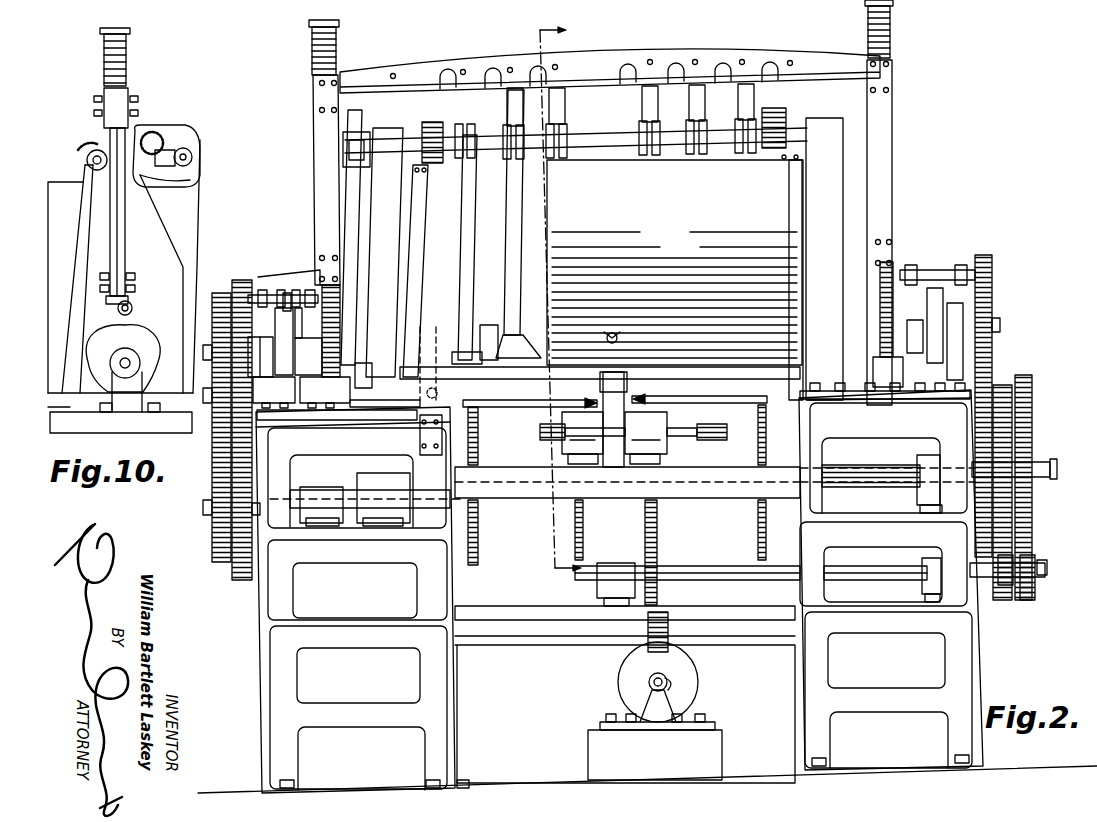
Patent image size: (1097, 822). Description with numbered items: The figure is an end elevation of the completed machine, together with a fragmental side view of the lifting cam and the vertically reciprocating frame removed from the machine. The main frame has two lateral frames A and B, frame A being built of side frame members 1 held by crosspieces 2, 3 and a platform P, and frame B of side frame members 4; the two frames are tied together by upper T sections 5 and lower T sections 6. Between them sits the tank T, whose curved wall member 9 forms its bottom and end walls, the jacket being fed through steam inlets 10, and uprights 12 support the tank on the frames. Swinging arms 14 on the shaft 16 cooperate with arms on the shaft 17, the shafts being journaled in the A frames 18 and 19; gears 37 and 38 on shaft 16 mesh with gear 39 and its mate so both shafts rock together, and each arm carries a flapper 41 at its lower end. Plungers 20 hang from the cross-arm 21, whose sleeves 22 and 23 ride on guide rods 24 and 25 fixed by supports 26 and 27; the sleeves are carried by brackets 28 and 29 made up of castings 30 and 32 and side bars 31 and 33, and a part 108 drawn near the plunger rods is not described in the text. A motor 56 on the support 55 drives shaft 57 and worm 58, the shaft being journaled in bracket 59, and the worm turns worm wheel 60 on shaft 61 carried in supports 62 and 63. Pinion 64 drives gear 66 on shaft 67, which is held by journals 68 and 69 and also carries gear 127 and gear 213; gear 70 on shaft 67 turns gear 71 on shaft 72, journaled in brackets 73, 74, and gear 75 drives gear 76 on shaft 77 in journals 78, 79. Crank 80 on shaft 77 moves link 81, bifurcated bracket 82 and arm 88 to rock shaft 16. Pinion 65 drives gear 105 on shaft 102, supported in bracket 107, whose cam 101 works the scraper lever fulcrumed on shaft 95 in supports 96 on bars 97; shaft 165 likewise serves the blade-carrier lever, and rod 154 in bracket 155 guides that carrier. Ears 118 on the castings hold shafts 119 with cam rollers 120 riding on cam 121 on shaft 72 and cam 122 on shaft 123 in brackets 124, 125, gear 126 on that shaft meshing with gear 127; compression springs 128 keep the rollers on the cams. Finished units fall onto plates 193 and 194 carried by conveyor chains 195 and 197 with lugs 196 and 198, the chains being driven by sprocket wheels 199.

In FIG. 2, the side frame members 1 is at (273, 642).
In FIG. 2, the crosspiece 2 is at (333, 527).
In FIG. 2, the crosspiece 3 is at (378, 573).
In FIG. 2, the side frame members 4 is at (953, 618).
In FIG. 2, the upper T sections 5 is at (550, 488).
In FIG. 2, the lower T sections 6 is at (585, 633).
In FIG. 2, the curved wall member 9 is at (601, 269).
In FIG. 2, the steam inlets 10 is at (614, 333).
In FIG. 2, the uprights 12 is at (604, 277).
In FIG. 2, the swinging arms 14 is at (478, 262).
In FIG. 10, the shaft 16 is at (165, 148).
In FIG. 2, the shaft 16 is at (612, 140).
In FIG. 10, the shaft 17 is at (87, 158).
In FIG. 10, the A frame 18 is at (156, 231).
In FIG. 2, the A frame 18 is at (384, 252).
In FIG. 2, the A frame 19 is at (824, 259).
In FIG. 2, the plungers 20 is at (506, 290).
In FIG. 2, the cross-arm 21 is at (430, 70).
In FIG. 10, the sleeve 22 is at (122, 100).
In FIG. 2, the sleeve 22 is at (312, 115).
In FIG. 2, the sleeve 23 is at (880, 98).
In FIG. 10, the vertical guide rod 24 is at (118, 182).
In FIG. 2, the vertical guide rod 24 is at (312, 52).
In FIG. 2, the vertical guide rod 25 is at (888, 42).
In FIG. 2, the support 26 is at (345, 355).
In FIG. 2, the support 27 is at (880, 360).
In FIG. 2, the vertically reciprocating bracket 28 is at (308, 126).
In FIG. 2, the vertically reciprocating bracket 29 is at (900, 132).
In FIG. 10, the casting member 30 is at (108, 283).
In FIG. 2, the casting member 30 is at (303, 263).
In FIG. 10, the side bars 31 is at (100, 105).
In FIG. 2, the side bars 31 is at (325, 172).
In FIG. 2, the casting 32 is at (905, 258).
In FIG. 2, the side bars 33 is at (878, 175).
In FIG. 10, the gear 37 is at (157, 134).
In FIG. 2, the gear 37 is at (430, 125).
In FIG. 2, the gear 38 is at (790, 112).
In FIG. 10, the gear 39 is at (85, 142).
In FIG. 2, the flapper 41 is at (503, 350).
In FIG. 2, the support 55 is at (655, 747).
In FIG. 2, the motor 56 is at (683, 673).
In FIG. 2, the shaft 57 is at (650, 683).
In FIG. 2, the worm 58 is at (665, 683).
In FIG. 2, the bracket 59 is at (658, 708).
In FIG. 2, the worm wheel 60 is at (643, 545).
In FIG. 2, the shaft 61 is at (725, 572).
In FIG. 2, the support 62 is at (616, 584).
In FIG. 2, the support 63 is at (923, 557).
In FIG. 2, the pinion 64 is at (1010, 587).
In FIG. 2, the pinion 65 is at (1047, 580).
In FIG. 2, the gear 66 is at (1002, 387).
In FIG. 2, the shaft 67 is at (213, 500).
In FIG. 2, the journal 68 is at (923, 495).
In FIG. 2, the journal 69 is at (366, 505).
In FIG. 2, the gear 70 is at (235, 563).
In FIG. 2, the gear 71 is at (240, 280).
In FIG. 2, the shaft 72 is at (315, 348).
In FIG. 10, the bracket 73 is at (138, 368).
In FIG. 2, the bracket 73 is at (260, 357).
In FIG. 2, the bracket 74 is at (298, 343).
In FIG. 2, the gear 75 is at (221, 292).
In FIG. 2, the gear 76 is at (213, 447).
In FIG. 2, the shaft 77 is at (213, 415).
In FIG. 2, the journal 78 is at (293, 392).
In FIG. 2, the journal 79 is at (325, 390).
In FIG. 2, the crank 80 is at (338, 404).
In FIG. 2, the link 81 is at (352, 190).
In FIG. 10, the bifurcated bracket 82 is at (176, 182).
In FIG. 2, the bifurcated bracket 82 is at (352, 148).
In FIG. 10, the arm 88 is at (192, 155).
In FIG. 2, the shaft 95 is at (570, 430).
In FIG. 2, the supports 96 is at (614, 438).
In FIG. 2, the bars 97 is at (647, 463).
In FIG. 2, the cam 101 is at (632, 525).
In FIG. 2, the shaft 102 is at (1040, 455).
In FIG. 2, the gear 105 is at (1045, 387).
In FIG. 2, the bracket 107 is at (935, 457).
In FIG. 2, the bracket 108 is at (490, 333).
In FIG. 10, the ears 118 is at (118, 302).
In FIG. 2, the ears 118 is at (300, 268).
In FIG. 10, the shaft 119 is at (165, 265).
In FIG. 2, the shaft 119 is at (307, 262).
In FIG. 10, the cam roller 120 is at (131, 307).
In FIG. 2, the cam roller 120 is at (280, 300).
In FIG. 10, the cam 121 is at (123, 358).
In FIG. 2, the cam 121 is at (217, 450).
In FIG. 2, the cam 122 is at (965, 300).
In FIG. 2, the shaft 123 is at (1000, 326).
In FIG. 2, the bracket 124 is at (915, 335).
In FIG. 2, the bracket 125 is at (955, 340).
In FIG. 2, the gear 126 is at (990, 315).
In FIG. 2, the gear 127 is at (980, 523).
In FIG. 10, the compression springs 128 is at (128, 47).
In FIG. 2, the compression springs 128 is at (308, 45).
In FIG. 2, the rod 154 is at (413, 388).
In FIG. 2, the bracket 155 is at (427, 332).
In FIG. 2, the shaft 165 is at (693, 453).
In FIG. 2, the plates 193 is at (547, 405).
In FIG. 2, the plates 194 is at (740, 400).
In FIG. 2, the conveyor chains 195 is at (550, 415).
In FIG. 2, the projecting lugs 196 is at (570, 410).
In FIG. 2, the conveyor chains 197 is at (690, 435).
In FIG. 2, the projecting lugs 198 is at (690, 420).
In FIG. 2, the sprocket wheels 199 is at (478, 520).
In FIG. 2, the gear 213 is at (217, 545).
In FIG. 2, the lateral frame A is at (262, 674).
In FIG. 2, the lateral frame B is at (980, 641).
In FIG. 2, the platform P is at (325, 420).
In FIG. 2, the tank T is at (714, 210).